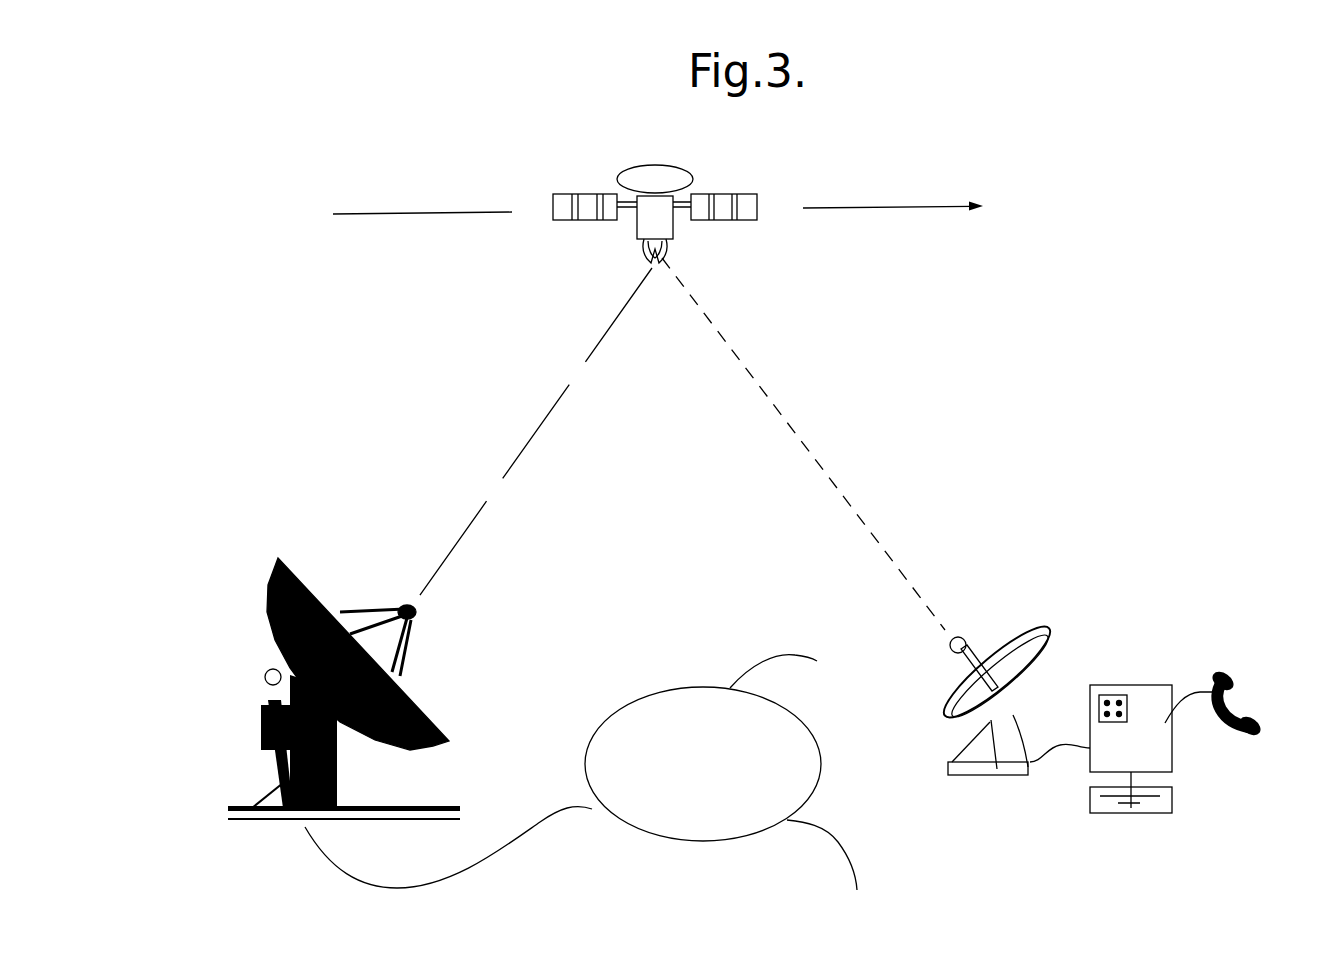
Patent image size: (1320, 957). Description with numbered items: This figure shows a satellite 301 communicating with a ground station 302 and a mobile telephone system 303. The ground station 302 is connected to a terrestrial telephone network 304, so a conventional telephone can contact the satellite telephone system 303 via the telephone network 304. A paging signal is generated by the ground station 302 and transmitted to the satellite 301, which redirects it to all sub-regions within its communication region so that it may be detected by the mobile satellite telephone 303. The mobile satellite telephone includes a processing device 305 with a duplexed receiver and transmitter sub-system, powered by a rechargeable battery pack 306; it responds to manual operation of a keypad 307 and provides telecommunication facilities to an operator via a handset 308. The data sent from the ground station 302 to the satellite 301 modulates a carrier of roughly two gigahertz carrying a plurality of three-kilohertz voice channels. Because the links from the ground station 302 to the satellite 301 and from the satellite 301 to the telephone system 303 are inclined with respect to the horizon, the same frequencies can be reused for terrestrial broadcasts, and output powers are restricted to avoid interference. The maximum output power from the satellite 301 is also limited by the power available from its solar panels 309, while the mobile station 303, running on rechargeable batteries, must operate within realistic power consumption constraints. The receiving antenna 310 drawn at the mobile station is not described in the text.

The satellite 301 is at (627, 211).
The ground station 302 is at (322, 594).
The mobile telephone system 303 is at (1099, 715).
The terrestrial telephone network 304 is at (648, 710).
The processing device 305 is at (1091, 744).
The rechargeable battery pack 306 is at (1150, 813).
The keypad 307 is at (1119, 694).
The handset 308 is at (1233, 733).
The solar panels 309 is at (556, 207).
The receiving antenna 310 is at (1007, 652).